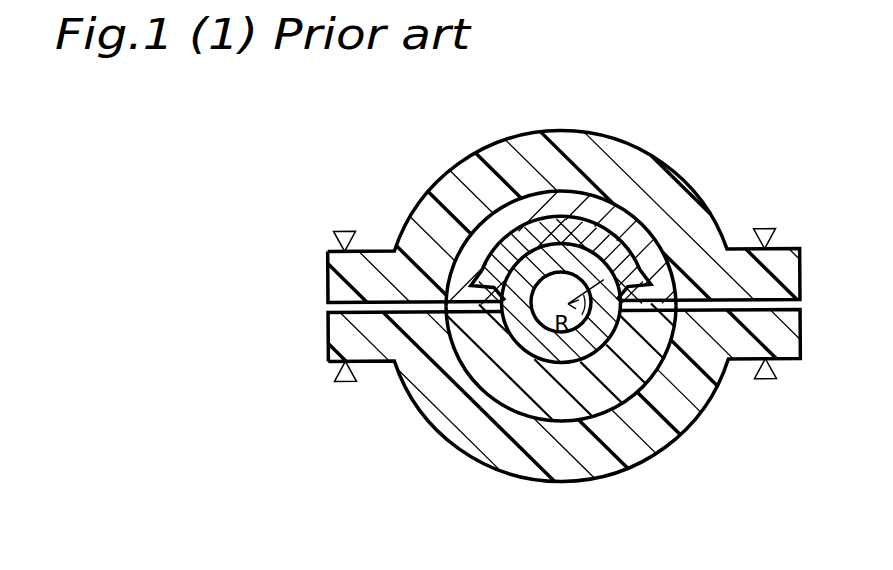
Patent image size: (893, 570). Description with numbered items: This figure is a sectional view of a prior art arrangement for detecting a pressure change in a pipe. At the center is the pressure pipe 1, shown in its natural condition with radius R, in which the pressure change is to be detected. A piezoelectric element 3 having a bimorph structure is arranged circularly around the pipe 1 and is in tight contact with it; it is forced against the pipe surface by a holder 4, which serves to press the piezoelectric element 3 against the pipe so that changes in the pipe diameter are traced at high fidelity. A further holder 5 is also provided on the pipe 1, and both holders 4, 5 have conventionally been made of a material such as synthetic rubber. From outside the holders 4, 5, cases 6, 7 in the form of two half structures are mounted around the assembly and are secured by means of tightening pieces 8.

The pressure pipe 1 is at (543, 340).
The piezoelectric element 3 is at (520, 250).
The holder 4 is at (615, 215).
The holder 5 is at (600, 400).
The case 6 is at (676, 207).
The case 7 is at (663, 437).
The tightening pieces 8 is at (768, 380).